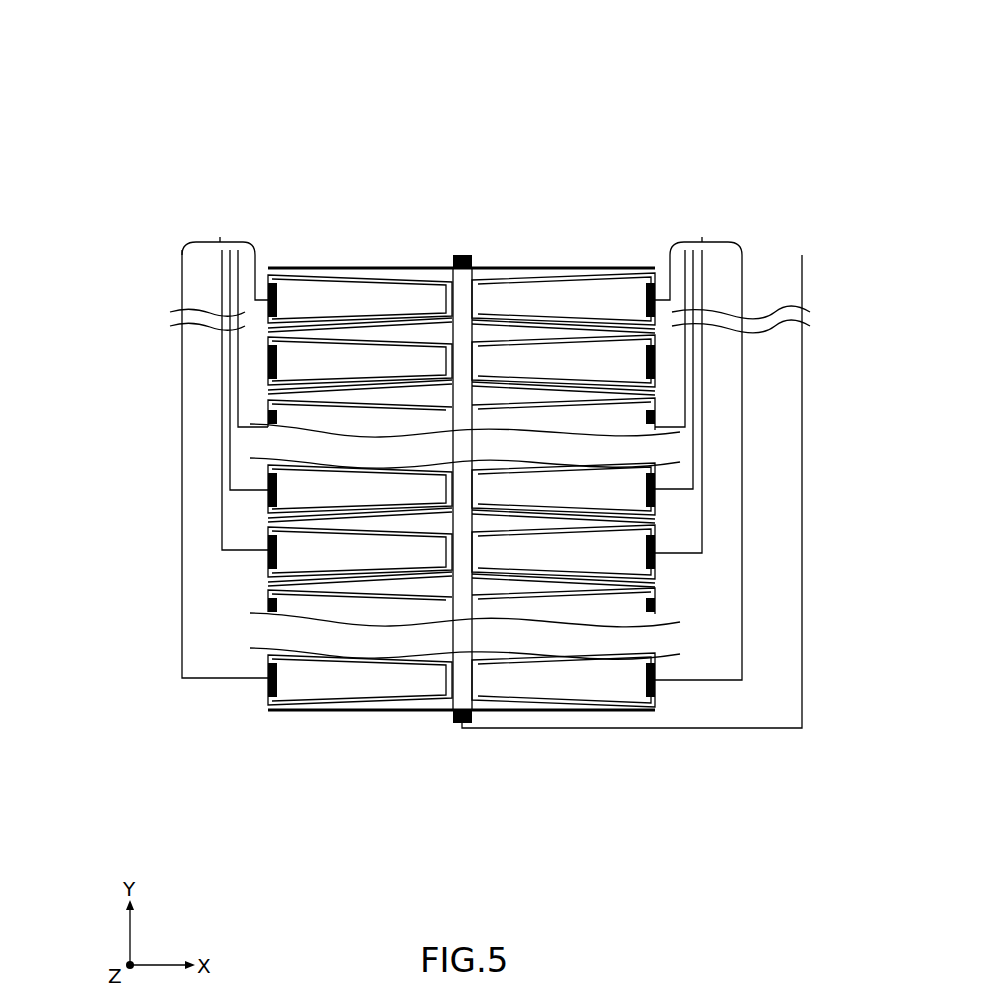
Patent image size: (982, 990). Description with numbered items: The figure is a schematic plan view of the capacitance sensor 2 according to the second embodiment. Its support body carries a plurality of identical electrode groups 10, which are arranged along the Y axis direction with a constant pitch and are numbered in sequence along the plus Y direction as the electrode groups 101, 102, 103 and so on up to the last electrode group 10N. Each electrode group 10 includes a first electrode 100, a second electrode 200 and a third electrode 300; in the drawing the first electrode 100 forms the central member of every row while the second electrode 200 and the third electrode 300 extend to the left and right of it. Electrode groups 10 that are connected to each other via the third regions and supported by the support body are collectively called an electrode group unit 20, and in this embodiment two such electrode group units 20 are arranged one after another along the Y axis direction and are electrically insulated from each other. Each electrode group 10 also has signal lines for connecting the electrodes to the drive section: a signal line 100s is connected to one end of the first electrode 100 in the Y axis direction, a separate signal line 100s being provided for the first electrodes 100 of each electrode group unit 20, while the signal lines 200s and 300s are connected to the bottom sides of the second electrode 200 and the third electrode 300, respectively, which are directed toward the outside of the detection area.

The capacitance sensor 2 is at (463, 66).
The electrode group 10 is at (436, 201).
The electrode group unit 20 is at (105, 265).
The first electrode 100 is at (368, 268).
The second electrode 200 is at (310, 302).
The third electrode 300 is at (487, 303).
The signal line 100s is at (462, 253).
The signal line 200s is at (219, 445).
The signal line 300s is at (732, 446).
The electrode group 101 is at (258, 288).
The electrode group 102 is at (258, 349).
The electrode group 103 is at (258, 413).
The electrode group 10N is at (258, 474).